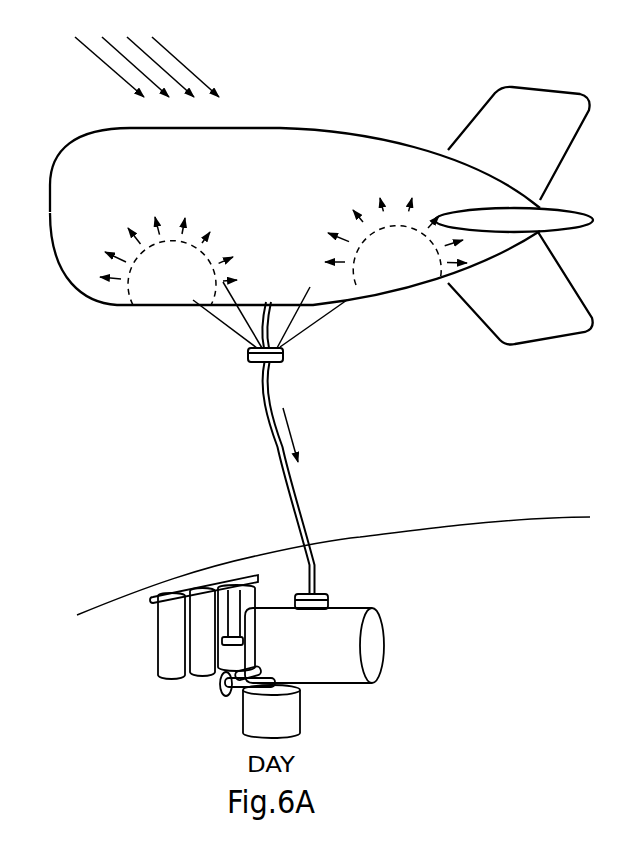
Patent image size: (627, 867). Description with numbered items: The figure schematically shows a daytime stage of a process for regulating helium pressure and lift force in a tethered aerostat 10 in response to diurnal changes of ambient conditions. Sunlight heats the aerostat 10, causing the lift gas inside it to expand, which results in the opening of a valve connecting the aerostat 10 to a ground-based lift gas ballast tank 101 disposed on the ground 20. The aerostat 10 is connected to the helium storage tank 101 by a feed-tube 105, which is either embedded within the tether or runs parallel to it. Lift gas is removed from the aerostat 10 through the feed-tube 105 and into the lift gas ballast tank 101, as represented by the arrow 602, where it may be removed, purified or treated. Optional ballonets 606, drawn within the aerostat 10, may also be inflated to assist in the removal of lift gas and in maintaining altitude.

The tethered aerostat 10 is at (287, 188).
The ballonets 606 is at (425, 338).
The arrow 602 is at (292, 435).
The feed-tube 105 is at (290, 493).
The helium storage tank 101 is at (345, 618).
The ground 20 is at (477, 726).